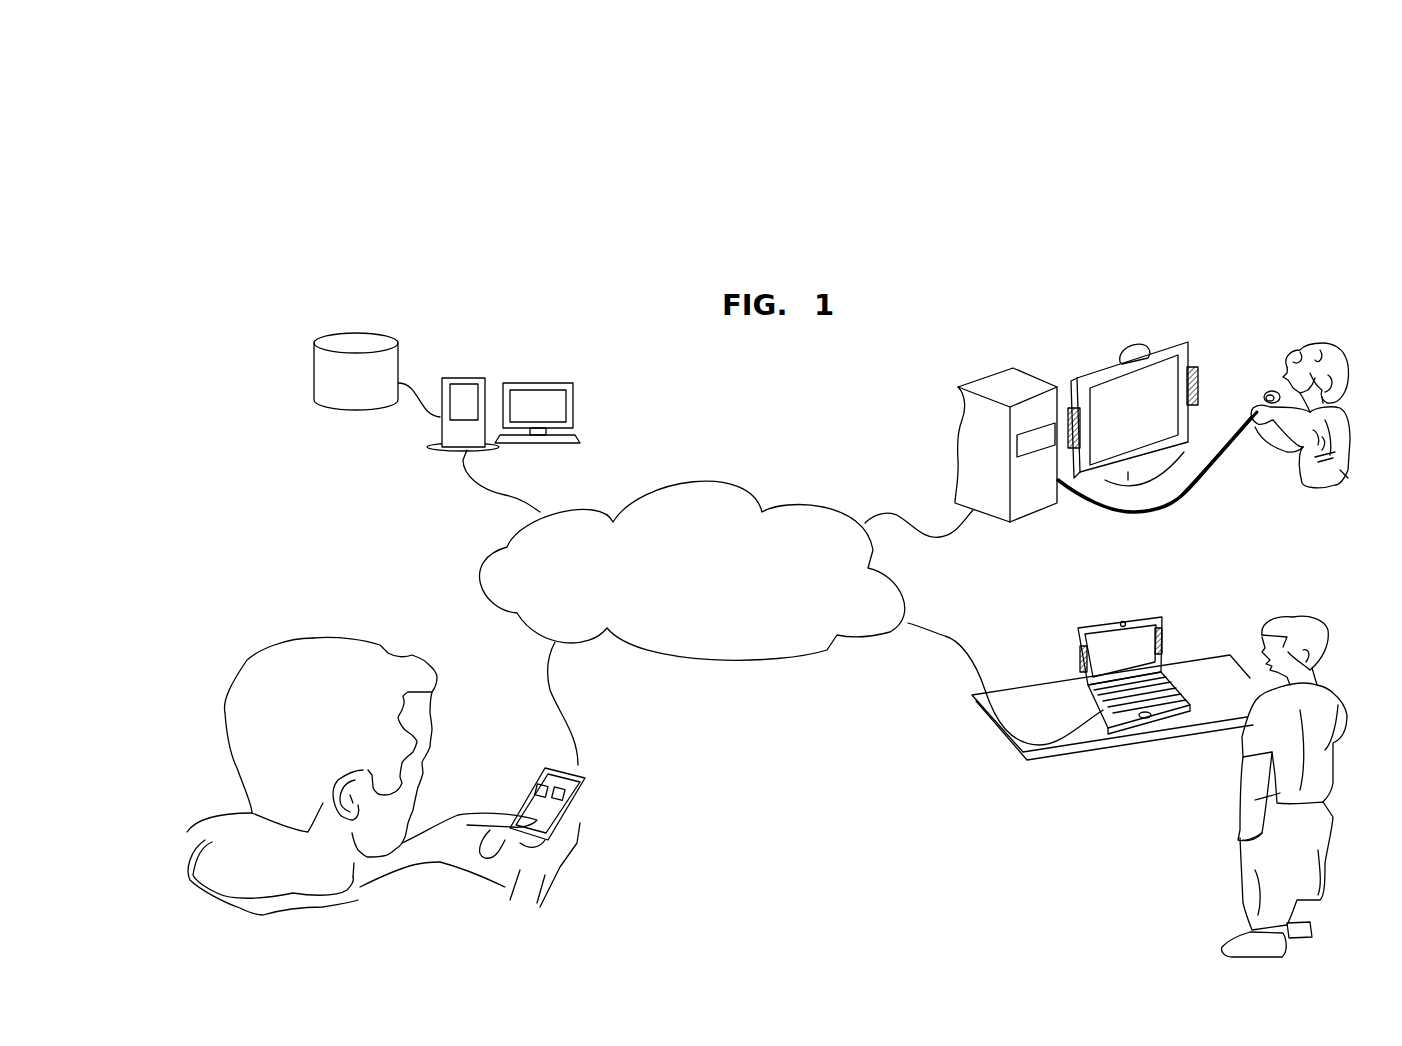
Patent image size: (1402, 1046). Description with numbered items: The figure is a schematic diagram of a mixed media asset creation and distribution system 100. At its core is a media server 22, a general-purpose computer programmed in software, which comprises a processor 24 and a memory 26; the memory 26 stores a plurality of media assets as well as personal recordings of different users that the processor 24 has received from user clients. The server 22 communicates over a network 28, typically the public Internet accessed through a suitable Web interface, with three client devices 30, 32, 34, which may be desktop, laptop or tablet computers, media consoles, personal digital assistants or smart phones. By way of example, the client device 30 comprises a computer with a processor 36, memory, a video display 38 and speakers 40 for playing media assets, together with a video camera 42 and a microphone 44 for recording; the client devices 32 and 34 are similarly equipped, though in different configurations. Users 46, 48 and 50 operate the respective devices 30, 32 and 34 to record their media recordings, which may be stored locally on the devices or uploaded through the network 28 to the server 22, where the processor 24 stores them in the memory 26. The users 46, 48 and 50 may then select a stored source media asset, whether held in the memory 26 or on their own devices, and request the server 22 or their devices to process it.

The mixed media asset creation and distribution system 100 is at (243, 130).
The media server 22 is at (302, 337).
The processor 24 is at (465, 378).
The memory 26 is at (362, 335).
The network 28 is at (718, 484).
The client device 30 is at (1098, 299).
The client device 32 is at (1057, 727).
The client device 34 is at (573, 835).
The processor 36 is at (1033, 502).
The video display 38 is at (1163, 372).
The speakers 40 is at (1072, 410).
The video camera 42 is at (1140, 342).
The microphone 44 is at (1263, 394).
The user 46 is at (1322, 350).
The user 48 is at (1305, 615).
The user 50 is at (326, 652).